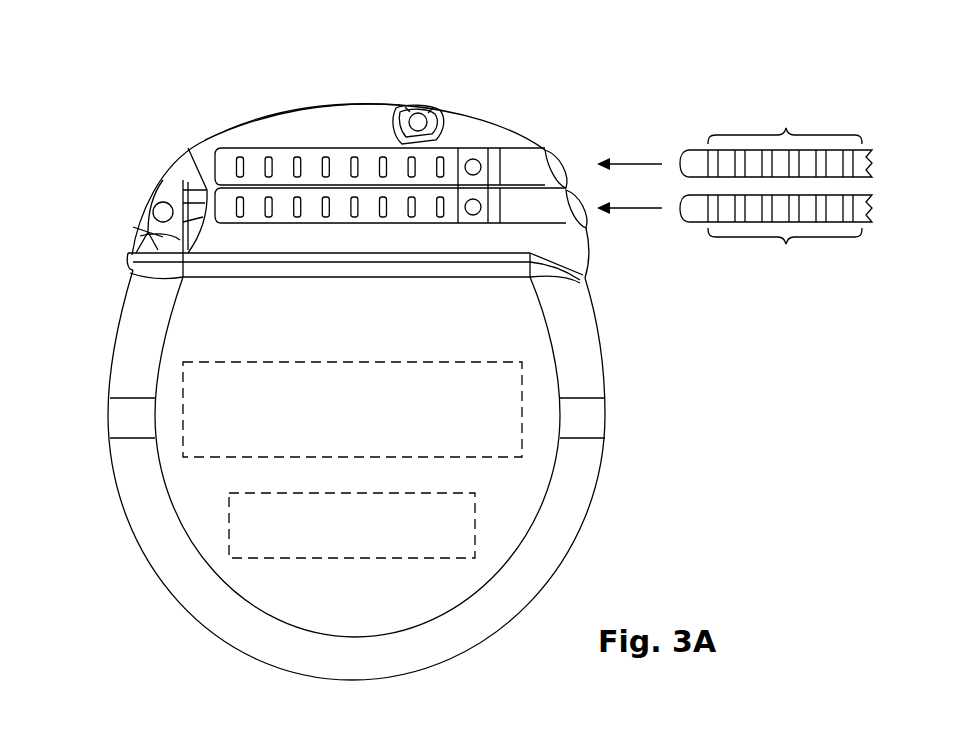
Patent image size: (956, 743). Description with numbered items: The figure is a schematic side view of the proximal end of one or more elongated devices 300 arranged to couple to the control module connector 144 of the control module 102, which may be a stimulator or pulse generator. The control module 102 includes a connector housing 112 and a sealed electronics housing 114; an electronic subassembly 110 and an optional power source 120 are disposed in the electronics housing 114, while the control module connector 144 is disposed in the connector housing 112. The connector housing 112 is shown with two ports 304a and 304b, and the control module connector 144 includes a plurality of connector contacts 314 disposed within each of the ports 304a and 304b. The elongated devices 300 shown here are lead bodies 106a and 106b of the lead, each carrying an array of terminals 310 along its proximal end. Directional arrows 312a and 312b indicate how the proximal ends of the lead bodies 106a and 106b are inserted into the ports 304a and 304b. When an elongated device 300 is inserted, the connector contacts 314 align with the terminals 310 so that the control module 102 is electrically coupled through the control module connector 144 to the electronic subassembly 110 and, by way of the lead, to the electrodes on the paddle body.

The control module 102 is at (156, 132).
The connector contact 314 is at (250, 160).
The connector housing 112 is at (330, 112).
The control module connector 144 is at (452, 150).
The port 304a is at (566, 140).
The port 304b is at (600, 237).
The directional arrow 312a is at (633, 164).
The directional arrow 312b is at (636, 208).
The lead body 106a is at (692, 150).
The lead body 106b is at (692, 222).
The terminals 310 is at (785, 187).
The elongated device 300 is at (824, 96).
The electronics housing 114 is at (183, 338).
The electronic subassembly 110 is at (202, 416).
The power source 120 is at (248, 532).